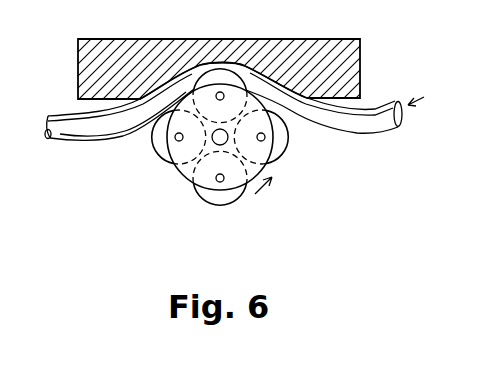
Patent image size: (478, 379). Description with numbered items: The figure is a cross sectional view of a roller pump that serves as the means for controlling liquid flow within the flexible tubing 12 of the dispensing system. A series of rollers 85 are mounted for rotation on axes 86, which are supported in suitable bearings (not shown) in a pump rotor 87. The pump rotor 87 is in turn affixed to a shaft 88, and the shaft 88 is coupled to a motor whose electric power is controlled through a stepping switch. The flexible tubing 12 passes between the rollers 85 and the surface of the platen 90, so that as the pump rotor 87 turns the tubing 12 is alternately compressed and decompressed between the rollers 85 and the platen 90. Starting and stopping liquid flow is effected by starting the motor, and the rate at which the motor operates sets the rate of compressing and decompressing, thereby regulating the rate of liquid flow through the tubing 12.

The platen 90 is at (268, 38).
The flexible tubing 12 is at (370, 128).
The shaft 88 is at (224, 143).
The pump rotor 87 is at (178, 170).
The axes 86 is at (216, 181).
The rollers 85 is at (215, 202).